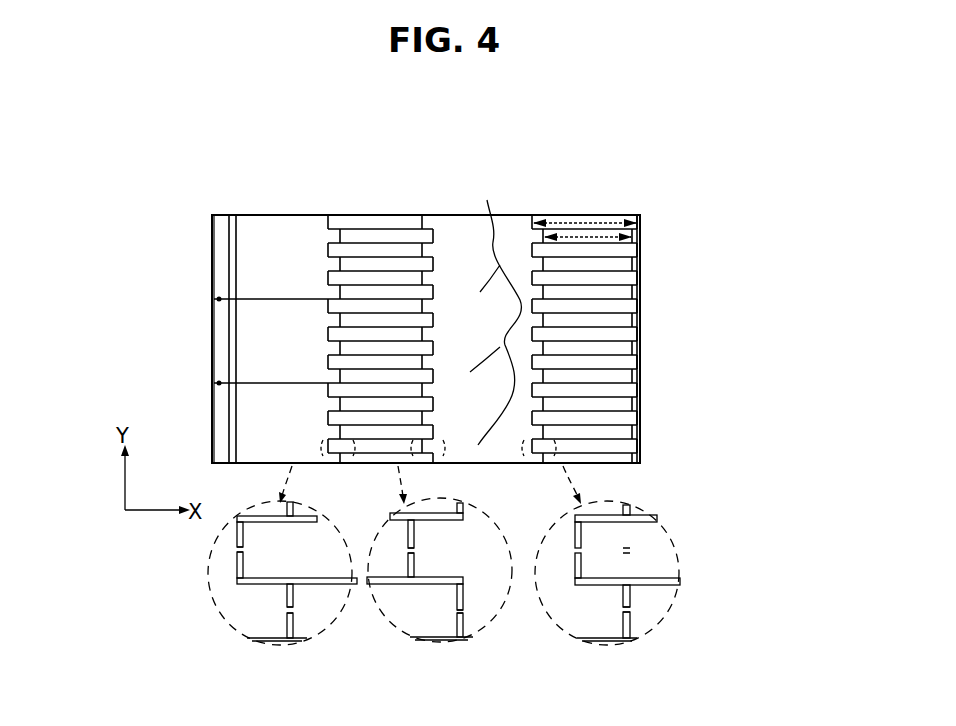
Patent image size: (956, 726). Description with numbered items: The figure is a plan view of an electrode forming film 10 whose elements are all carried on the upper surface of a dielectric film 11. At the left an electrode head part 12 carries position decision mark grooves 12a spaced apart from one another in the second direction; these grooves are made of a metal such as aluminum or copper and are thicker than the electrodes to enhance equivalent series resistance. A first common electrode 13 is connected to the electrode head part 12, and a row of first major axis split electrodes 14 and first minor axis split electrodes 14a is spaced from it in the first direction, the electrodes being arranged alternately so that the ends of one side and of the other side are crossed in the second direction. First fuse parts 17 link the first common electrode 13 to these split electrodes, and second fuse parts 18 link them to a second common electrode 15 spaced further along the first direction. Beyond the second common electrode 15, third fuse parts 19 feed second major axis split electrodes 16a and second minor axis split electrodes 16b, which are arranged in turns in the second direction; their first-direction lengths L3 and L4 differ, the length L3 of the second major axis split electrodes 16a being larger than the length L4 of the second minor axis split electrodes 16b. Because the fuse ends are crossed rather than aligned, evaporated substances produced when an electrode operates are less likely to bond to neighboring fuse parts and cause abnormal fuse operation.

The electrode forming film 10 is at (198, 211).
The dielectric film 11 is at (641, 330).
The electrode head part 12 is at (213, 326).
The position decision mark grooves 12a is at (219, 299).
The first common electrode 13 is at (249, 242).
The first major axis split electrodes 14 is at (336, 282).
The first minor axis split electrodes 14a is at (345, 360).
The second common electrode 15 is at (575, 668).
The second major axis split electrodes 16a is at (642, 222).
The second minor axis split electrodes 16b is at (642, 247).
The first fuse parts 17 is at (237, 546).
The second fuse parts 18 is at (414, 550).
The third fuse parts 19 is at (628, 512).
The length of the second major axis split electrodes in the first direction L3 is at (569, 220).
The length of the second minor axis split electrodes in the first direction L4 is at (604, 233).